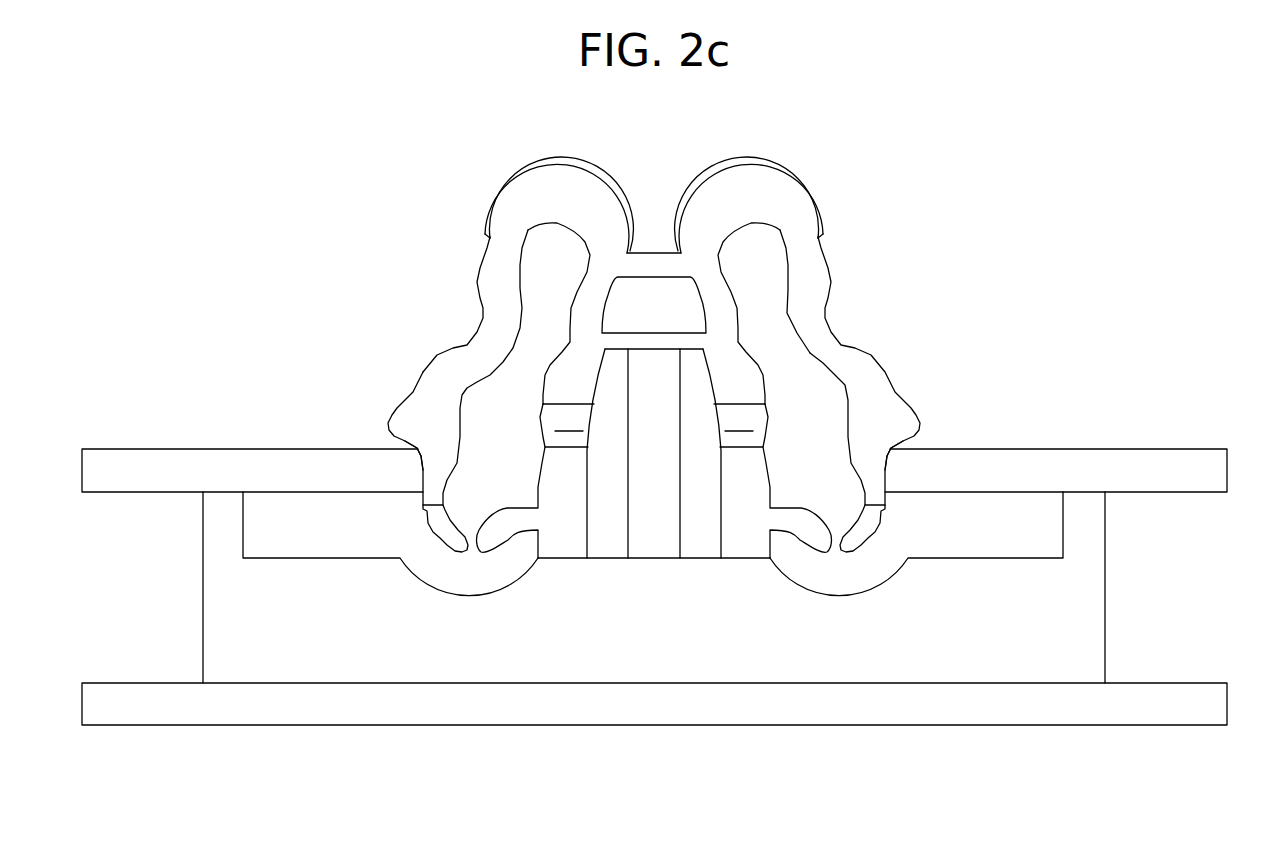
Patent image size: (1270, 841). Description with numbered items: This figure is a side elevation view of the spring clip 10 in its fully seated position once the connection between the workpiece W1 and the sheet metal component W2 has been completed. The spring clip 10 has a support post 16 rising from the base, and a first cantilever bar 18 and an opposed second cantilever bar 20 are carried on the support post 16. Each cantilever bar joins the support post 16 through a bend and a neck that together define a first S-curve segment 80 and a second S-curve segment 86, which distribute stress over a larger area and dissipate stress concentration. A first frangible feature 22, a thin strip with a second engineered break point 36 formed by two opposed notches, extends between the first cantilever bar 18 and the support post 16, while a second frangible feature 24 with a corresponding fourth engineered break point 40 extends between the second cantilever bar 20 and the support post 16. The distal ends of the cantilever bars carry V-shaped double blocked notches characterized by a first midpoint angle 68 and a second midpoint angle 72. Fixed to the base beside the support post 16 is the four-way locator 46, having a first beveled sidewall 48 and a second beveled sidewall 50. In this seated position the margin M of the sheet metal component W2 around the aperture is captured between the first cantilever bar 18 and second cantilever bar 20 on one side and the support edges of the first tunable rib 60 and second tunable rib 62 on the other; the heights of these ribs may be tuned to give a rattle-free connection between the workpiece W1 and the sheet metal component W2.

The spring clip 10 is at (855, 198).
The support post 16 is at (728, 385).
The first cantilever bar 18 is at (487, 340).
The second cantilever bar 20 is at (865, 375).
The first frangible feature 22 is at (452, 540).
The second frangible feature 24 is at (860, 537).
The second engineered break point 36 is at (472, 537).
The fourth engineered break point 40 is at (838, 550).
The four-way locator 46 is at (647, 577).
The first beveled sidewall 48 is at (603, 510).
The second beveled sidewall 50 is at (702, 518).
The first tunable rib 60 is at (220, 490).
The second tunable rib 62 is at (1087, 490).
The first midpoint angle 68 is at (425, 440).
The second midpoint angle 72 is at (848, 452).
The first S-curve segment 80 is at (470, 250).
The second S-curve segment 86 is at (852, 260).
The margin M is at (412, 477).
The workpiece W1 is at (1163, 715).
The sheet metal component W2 is at (140, 468).